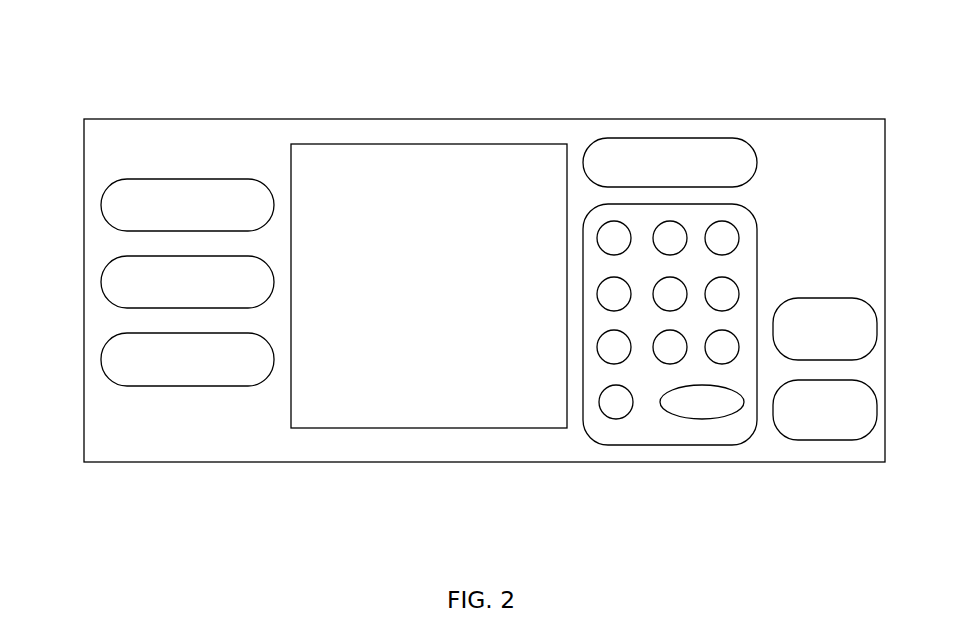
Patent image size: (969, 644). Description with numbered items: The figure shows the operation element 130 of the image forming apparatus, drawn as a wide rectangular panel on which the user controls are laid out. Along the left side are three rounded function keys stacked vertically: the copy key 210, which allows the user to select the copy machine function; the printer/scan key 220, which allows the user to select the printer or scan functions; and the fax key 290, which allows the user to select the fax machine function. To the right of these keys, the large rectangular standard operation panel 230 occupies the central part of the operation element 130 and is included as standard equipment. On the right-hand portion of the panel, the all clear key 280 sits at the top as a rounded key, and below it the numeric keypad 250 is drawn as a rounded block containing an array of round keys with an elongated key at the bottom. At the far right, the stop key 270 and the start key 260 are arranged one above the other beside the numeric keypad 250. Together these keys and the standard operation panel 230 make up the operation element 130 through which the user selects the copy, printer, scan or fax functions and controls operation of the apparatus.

The operation element 130 is at (463, 119).
The copy key 210 is at (101, 203).
The printer/scan key 220 is at (101, 282).
The fax key 290 is at (101, 359).
The standard operation panel 230 is at (428, 428).
The all clear key 280 is at (670, 138).
The numeric keypad 250 is at (672, 445).
The stop key 270 is at (827, 298).
The start key 260 is at (825, 440).